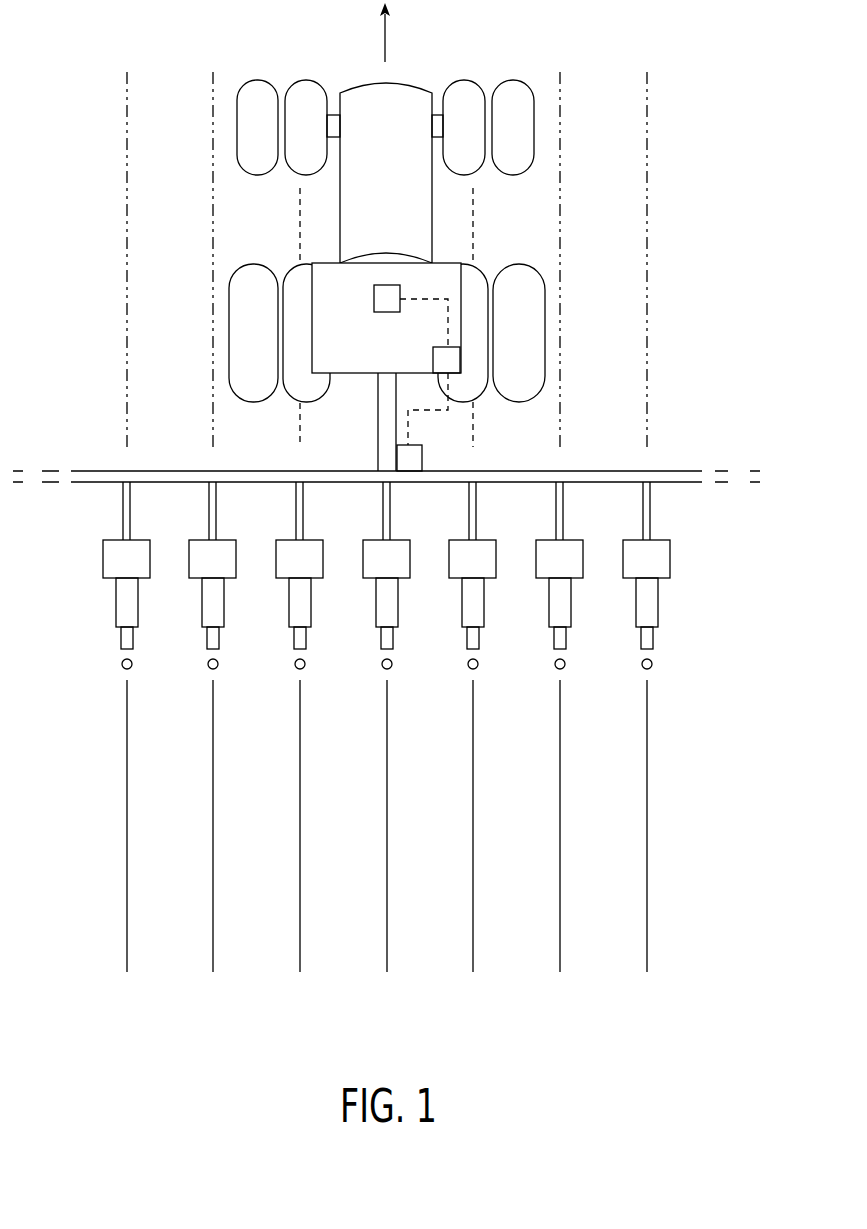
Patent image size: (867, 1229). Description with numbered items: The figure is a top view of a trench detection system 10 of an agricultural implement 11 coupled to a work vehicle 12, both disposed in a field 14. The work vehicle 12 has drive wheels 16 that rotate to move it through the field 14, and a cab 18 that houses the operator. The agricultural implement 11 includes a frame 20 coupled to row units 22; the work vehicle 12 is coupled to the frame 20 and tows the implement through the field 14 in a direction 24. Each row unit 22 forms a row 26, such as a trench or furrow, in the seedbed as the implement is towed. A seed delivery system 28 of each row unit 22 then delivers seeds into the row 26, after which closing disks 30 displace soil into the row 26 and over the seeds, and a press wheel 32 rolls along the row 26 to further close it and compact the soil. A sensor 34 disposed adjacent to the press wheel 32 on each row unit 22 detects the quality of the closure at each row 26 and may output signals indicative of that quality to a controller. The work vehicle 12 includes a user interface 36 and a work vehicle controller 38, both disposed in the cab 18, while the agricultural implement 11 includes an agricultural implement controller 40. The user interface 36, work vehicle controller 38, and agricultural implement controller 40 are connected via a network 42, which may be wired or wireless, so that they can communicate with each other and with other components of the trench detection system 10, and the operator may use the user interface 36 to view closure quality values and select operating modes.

The trench detection system 10 is at (697, 358).
The agricultural implement 11 is at (401, 567).
The work vehicle 12 is at (398, 196).
The field 14 is at (617, 39).
The drive wheels 16 is at (474, 276).
The cab 18 is at (333, 282).
The frame 20 is at (672, 471).
The row units 22 is at (386, 610).
The direction 24 is at (386, 40).
The row 26 is at (213, 940).
The seed delivery system 28 is at (364, 553).
The closing disks 30 is at (377, 602).
The press wheel 32 is at (467, 640).
The sensor 34 is at (555, 664).
The user interface 36 is at (400, 293).
The work vehicle controller 38 is at (450, 347).
The agricultural implement controller 40 is at (422, 460).
The network 42 is at (415, 433).